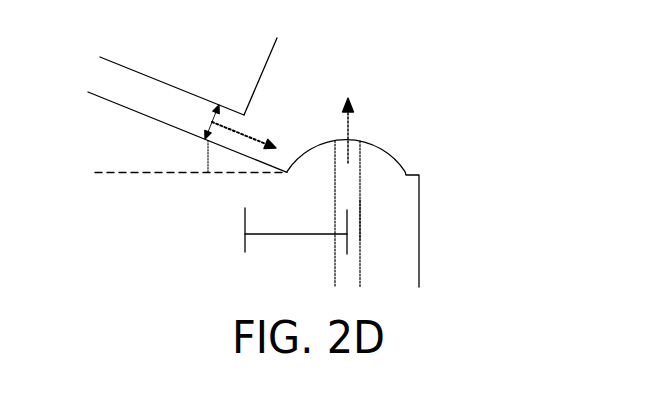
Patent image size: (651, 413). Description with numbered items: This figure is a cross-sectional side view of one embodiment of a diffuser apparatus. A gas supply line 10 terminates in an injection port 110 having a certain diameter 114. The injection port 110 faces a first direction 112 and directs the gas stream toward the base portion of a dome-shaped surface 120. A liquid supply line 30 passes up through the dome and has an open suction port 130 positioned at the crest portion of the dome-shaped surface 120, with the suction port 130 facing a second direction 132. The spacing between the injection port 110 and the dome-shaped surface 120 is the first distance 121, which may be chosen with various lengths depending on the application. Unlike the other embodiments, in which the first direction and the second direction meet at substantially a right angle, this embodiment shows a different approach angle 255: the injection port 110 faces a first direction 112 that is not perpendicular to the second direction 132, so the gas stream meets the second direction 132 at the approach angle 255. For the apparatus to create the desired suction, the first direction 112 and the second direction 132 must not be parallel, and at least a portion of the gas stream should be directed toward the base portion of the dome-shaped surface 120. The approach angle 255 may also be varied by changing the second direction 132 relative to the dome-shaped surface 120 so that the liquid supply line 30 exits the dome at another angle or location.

The gas supply line 10 is at (150, 77).
The injection port 110 is at (260, 118).
The diameter 114 is at (214, 112).
The approach angle 255 is at (208, 152).
The first direction 112 is at (243, 137).
The dome-shaped surface 120 is at (394, 156).
The second direction 132 is at (349, 125).
The suction port 130 is at (335, 131).
The liquid supply line 30 is at (362, 220).
The first distance 121 is at (273, 235).